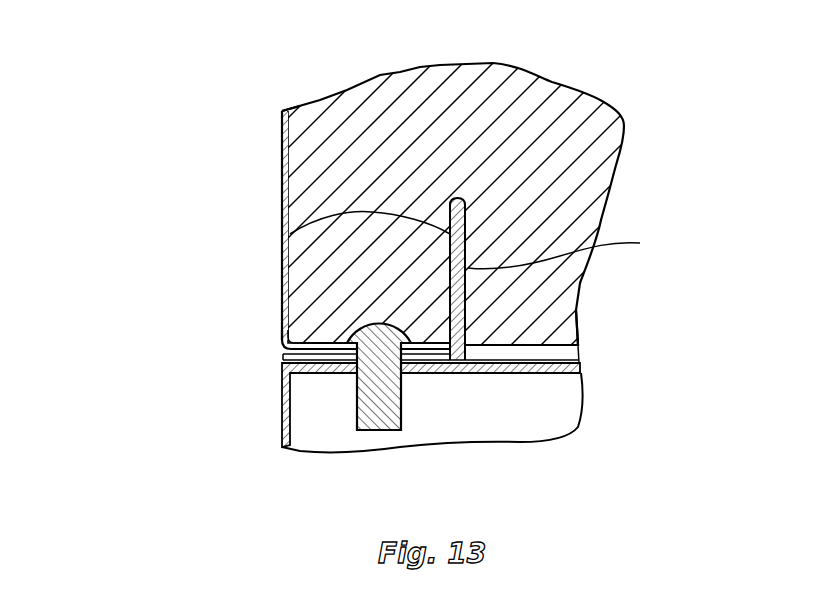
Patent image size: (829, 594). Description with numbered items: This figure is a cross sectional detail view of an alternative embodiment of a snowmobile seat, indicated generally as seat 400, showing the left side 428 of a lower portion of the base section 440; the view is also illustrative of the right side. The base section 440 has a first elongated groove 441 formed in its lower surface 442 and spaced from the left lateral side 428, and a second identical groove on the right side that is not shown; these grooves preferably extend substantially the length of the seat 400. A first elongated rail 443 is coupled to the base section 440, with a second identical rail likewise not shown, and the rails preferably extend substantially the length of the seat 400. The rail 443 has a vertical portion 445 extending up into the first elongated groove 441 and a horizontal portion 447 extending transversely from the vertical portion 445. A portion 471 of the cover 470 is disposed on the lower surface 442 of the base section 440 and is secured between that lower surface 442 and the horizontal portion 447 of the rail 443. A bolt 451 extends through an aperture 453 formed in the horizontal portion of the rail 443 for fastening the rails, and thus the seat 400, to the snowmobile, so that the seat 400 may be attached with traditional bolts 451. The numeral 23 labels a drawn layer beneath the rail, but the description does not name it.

The seat 400 is at (89, 90).
The left side 428 is at (300, 122).
The base section 440 is at (527, 205).
The first elongated groove 441 is at (492, 212).
The lower surface 442 is at (547, 343).
The first elongated rail 443 is at (640, 243).
The vertical portion 445 is at (290, 234).
The horizontal portion 447 is at (450, 378).
The bolt 451 is at (373, 430).
The aperture 453 is at (358, 352).
The cover 470 is at (282, 167).
The portion of the cover 471 is at (303, 345).
The substrate 23 is at (490, 378).